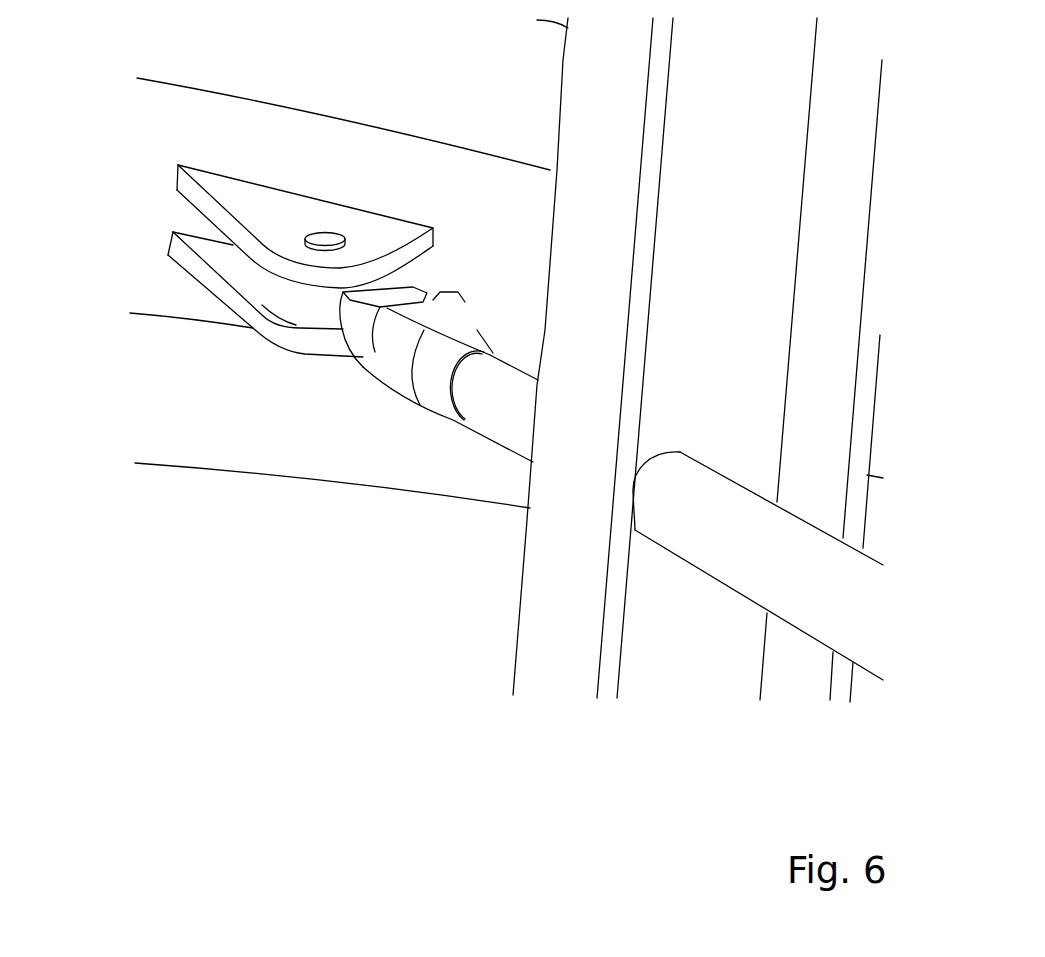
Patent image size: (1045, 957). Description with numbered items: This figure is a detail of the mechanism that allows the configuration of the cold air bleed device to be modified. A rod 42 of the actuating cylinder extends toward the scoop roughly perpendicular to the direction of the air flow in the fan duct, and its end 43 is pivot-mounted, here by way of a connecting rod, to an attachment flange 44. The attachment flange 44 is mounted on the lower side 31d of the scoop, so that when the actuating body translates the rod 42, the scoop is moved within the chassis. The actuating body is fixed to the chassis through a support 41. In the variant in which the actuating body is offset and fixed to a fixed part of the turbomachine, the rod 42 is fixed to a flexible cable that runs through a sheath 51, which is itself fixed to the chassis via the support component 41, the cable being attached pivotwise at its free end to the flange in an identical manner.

The lower side of the scoop 31d is at (160, 412).
The attachment flange 44 is at (257, 203).
The end of the rod 43 is at (398, 372).
The support 41 is at (583, 687).
The rod 42 is at (758, 624).
The sheath 51 is at (770, 585).